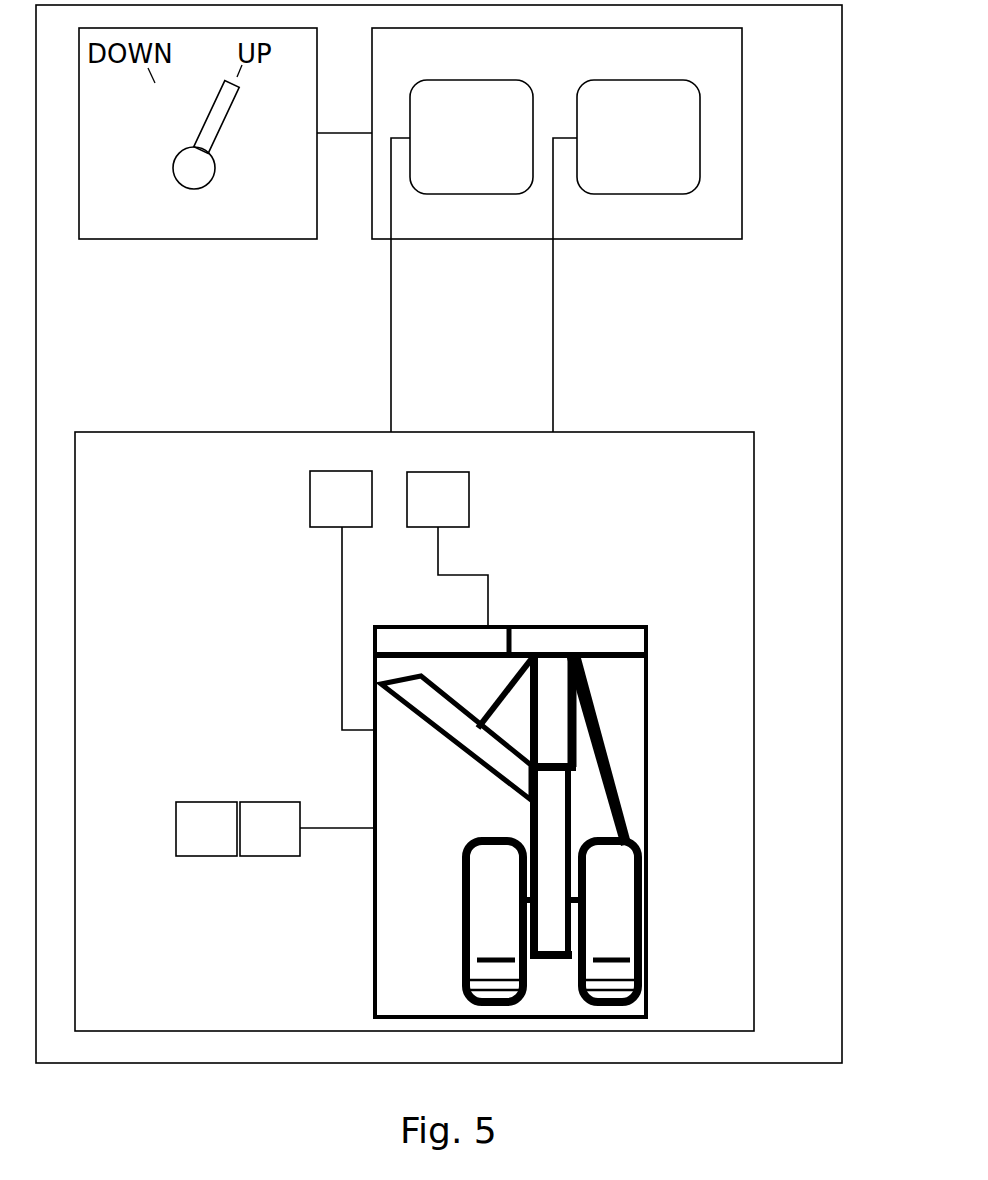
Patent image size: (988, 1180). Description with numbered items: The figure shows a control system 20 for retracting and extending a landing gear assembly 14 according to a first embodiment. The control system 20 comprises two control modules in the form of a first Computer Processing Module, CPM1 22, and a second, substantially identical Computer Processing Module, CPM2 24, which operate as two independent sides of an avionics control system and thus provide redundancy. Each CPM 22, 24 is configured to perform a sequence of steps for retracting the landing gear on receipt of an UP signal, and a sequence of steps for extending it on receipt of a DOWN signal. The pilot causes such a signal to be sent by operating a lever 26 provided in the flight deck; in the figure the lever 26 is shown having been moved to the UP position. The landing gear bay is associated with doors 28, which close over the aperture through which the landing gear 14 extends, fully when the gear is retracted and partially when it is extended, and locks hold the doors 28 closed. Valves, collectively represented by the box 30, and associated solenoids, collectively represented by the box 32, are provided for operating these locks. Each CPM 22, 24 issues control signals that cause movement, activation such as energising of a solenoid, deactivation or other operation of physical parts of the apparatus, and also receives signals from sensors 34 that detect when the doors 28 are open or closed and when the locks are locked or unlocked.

The control system 20 is at (827, 548).
The lever 26 is at (187, 177).
The first Computer Processing Module (CPM1) 22 is at (492, 183).
The second Computer Processing Module (CPM2) 24 is at (632, 187).
The sensors 34 is at (355, 512).
The solenoids 32 is at (220, 842).
The valves 30 is at (282, 842).
The doors 28 is at (495, 633).
The landing gear assembly 14 is at (623, 885).